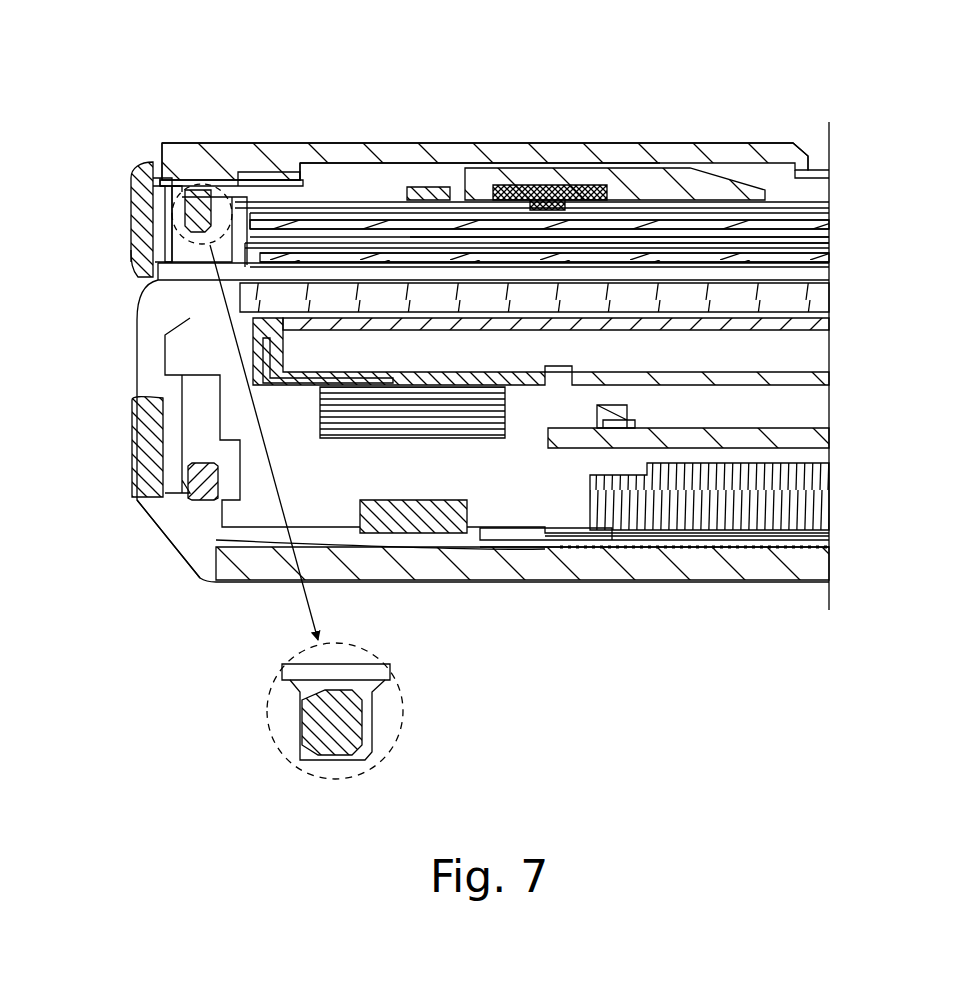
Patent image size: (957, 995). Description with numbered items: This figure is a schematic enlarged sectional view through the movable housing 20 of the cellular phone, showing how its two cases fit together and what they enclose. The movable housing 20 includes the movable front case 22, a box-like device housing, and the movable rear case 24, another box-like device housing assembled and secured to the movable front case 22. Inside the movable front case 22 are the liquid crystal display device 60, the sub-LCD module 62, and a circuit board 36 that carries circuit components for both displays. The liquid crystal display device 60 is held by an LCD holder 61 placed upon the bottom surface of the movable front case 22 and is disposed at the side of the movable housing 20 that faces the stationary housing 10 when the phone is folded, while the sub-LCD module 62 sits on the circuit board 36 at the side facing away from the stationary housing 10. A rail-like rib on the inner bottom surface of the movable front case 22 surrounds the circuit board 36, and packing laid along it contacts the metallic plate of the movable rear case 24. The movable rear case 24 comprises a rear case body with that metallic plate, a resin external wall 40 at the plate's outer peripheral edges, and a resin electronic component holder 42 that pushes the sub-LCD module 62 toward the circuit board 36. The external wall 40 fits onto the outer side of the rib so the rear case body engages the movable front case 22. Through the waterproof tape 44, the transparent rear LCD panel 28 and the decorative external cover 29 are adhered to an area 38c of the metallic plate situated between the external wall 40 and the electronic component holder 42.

The stationary housing 10 is at (140, 527).
The movable housing 20 is at (110, 242).
The movable front case 22 is at (155, 284).
The movable rear case 24 is at (128, 178).
The rear LCD panel 28 is at (625, 148).
The external cover 29 is at (820, 172).
The circuit board 36 is at (832, 210).
The area 38c is at (242, 172).
The external wall 40 is at (150, 205).
The electronic component holder 42 is at (328, 250).
The waterproof tape 44 is at (178, 178).
The liquid crystal display device 60 is at (832, 250).
The LCD holder 61 is at (327, 245).
The sub-LCD module 62 is at (518, 188).